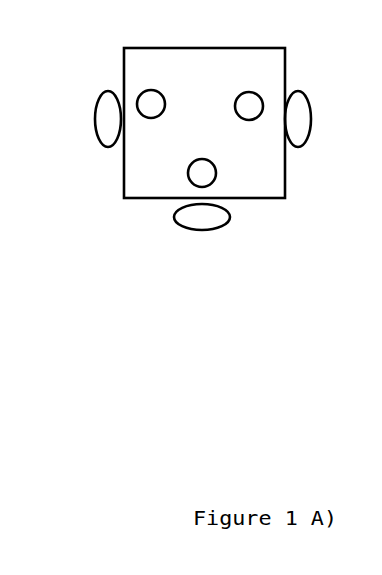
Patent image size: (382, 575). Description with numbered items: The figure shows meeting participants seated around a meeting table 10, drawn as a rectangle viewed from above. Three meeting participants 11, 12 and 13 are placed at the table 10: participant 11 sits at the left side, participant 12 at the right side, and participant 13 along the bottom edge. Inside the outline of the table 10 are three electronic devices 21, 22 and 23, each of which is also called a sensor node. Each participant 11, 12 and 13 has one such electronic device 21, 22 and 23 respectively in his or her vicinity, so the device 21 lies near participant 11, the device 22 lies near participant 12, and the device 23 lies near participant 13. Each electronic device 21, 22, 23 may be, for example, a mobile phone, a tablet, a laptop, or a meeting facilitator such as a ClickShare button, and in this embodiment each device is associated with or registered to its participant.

The table 10 is at (157, 48).
The meeting participant 11 is at (110, 91).
The meeting participant 12 is at (297, 91).
The meeting participant 13 is at (232, 216).
The electronic device 21 is at (145, 91).
The electronic device 22 is at (237, 93).
The electronic device 23 is at (190, 164).